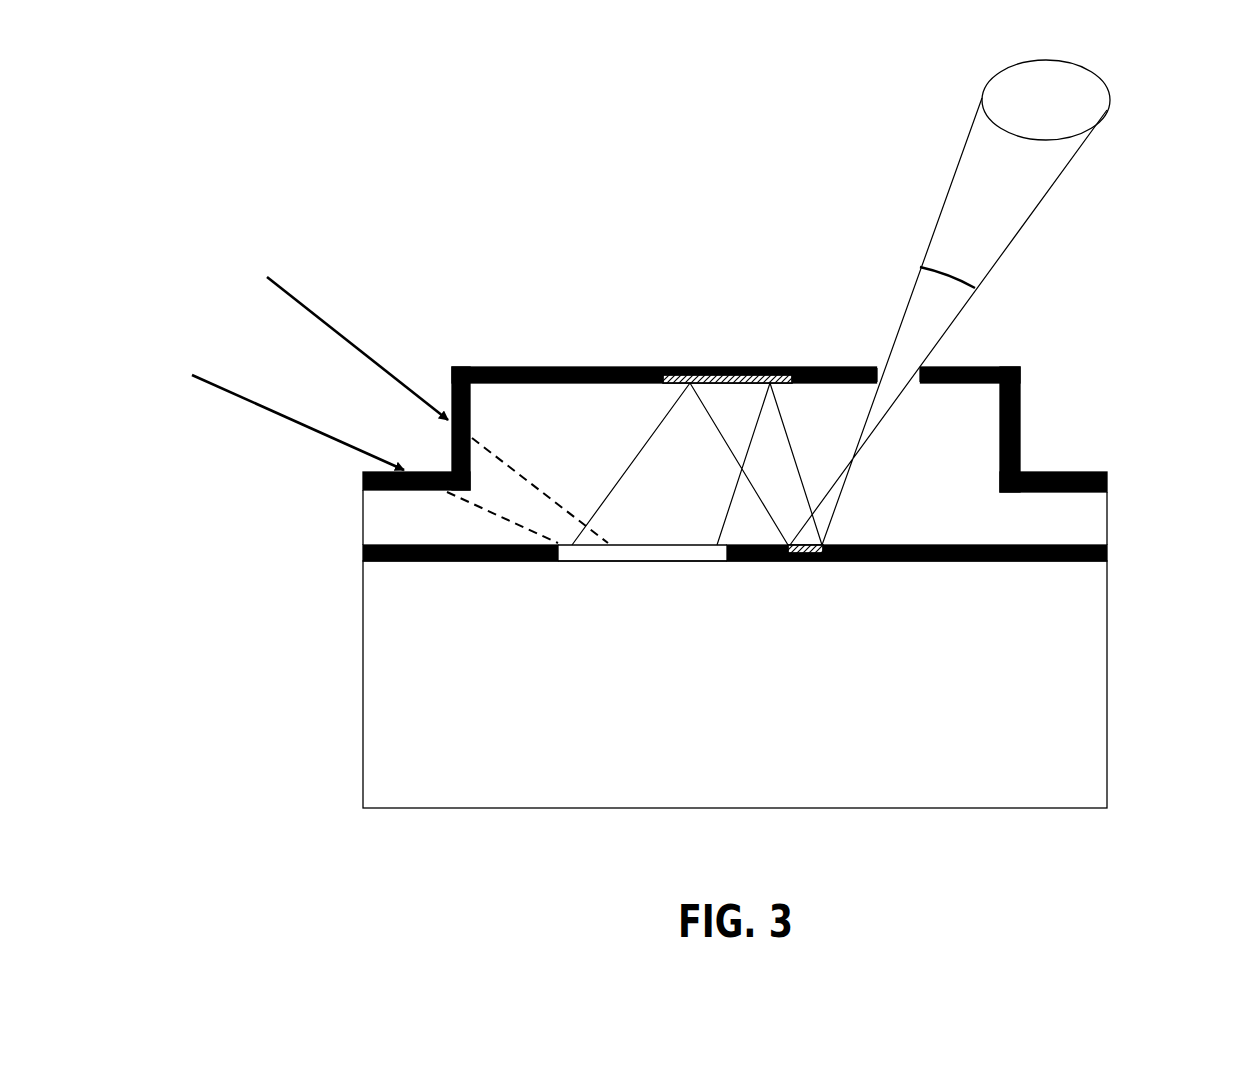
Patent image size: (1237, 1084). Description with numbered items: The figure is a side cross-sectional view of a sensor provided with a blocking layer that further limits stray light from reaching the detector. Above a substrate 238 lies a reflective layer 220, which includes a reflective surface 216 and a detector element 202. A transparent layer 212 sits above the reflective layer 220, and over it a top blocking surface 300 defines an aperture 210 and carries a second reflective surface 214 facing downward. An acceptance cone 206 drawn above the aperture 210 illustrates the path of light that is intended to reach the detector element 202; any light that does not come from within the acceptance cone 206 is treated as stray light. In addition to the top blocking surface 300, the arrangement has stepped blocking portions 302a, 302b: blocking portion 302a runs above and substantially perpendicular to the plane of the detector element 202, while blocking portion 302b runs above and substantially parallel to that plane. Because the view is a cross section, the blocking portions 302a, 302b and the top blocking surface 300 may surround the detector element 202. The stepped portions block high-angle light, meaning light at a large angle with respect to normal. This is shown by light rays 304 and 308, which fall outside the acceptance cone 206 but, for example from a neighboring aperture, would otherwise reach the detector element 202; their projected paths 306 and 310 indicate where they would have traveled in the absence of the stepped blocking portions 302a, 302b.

The detector element 202 is at (678, 562).
The acceptance cone 206 is at (940, 293).
The aperture 210 is at (915, 400).
The transparent layer 212 is at (1105, 512).
The second reflective surface 214 is at (675, 383).
The reflective surface 216 is at (826, 540).
The reflective layer 220 is at (935, 562).
The substrate 238 is at (1107, 612).
The top blocking surface 300 is at (500, 367).
The blocking portion 302a is at (450, 433).
The blocking portion 302b is at (380, 470).
The light ray 304 is at (308, 305).
The projected path 306 is at (522, 470).
The light ray 308 is at (243, 395).
The projected path 310 is at (470, 505).